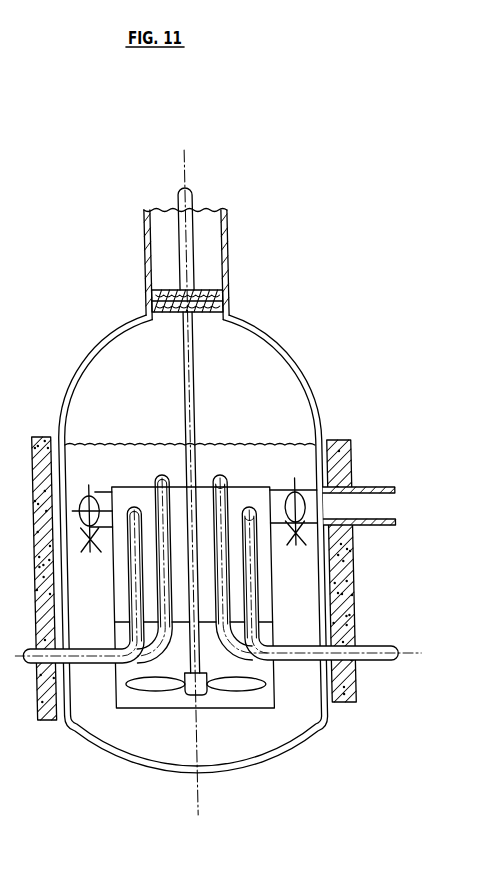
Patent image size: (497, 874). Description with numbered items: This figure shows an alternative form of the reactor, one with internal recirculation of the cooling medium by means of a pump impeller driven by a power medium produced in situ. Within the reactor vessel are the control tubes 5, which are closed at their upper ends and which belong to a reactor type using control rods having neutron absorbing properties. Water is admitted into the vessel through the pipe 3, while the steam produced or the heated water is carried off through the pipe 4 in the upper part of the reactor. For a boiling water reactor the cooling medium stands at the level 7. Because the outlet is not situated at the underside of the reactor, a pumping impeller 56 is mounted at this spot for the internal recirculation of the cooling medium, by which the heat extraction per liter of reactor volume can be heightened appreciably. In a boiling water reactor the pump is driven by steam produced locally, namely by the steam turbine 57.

The pipe 3 is at (270, 506).
The pipe 4 is at (224, 272).
The control tubes 5 is at (158, 485).
The level of the cooling medium 7 is at (144, 445).
The pumping impeller 56 is at (203, 695).
The steam turbine 57 is at (205, 288).